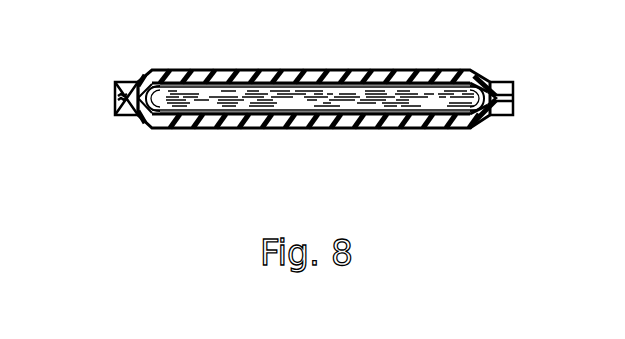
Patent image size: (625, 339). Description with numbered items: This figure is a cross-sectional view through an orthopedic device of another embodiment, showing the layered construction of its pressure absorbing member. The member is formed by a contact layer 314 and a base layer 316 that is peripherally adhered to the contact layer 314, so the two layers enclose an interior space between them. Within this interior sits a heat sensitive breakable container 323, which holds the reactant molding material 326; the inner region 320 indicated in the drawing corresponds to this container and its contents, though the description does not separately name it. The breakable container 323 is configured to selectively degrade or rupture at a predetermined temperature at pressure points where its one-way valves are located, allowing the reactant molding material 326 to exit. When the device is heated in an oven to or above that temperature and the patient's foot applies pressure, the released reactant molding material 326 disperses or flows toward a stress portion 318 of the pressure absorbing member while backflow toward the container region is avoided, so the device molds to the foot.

The contact layer 314 is at (129, 82).
The base layer 316 is at (129, 115).
The stress portion 318 is at (380, 106).
The inner capsule 320 is at (218, 93).
The heat sensitive breakable container 323 is at (305, 112).
The reactant molding material 326 is at (308, 100).